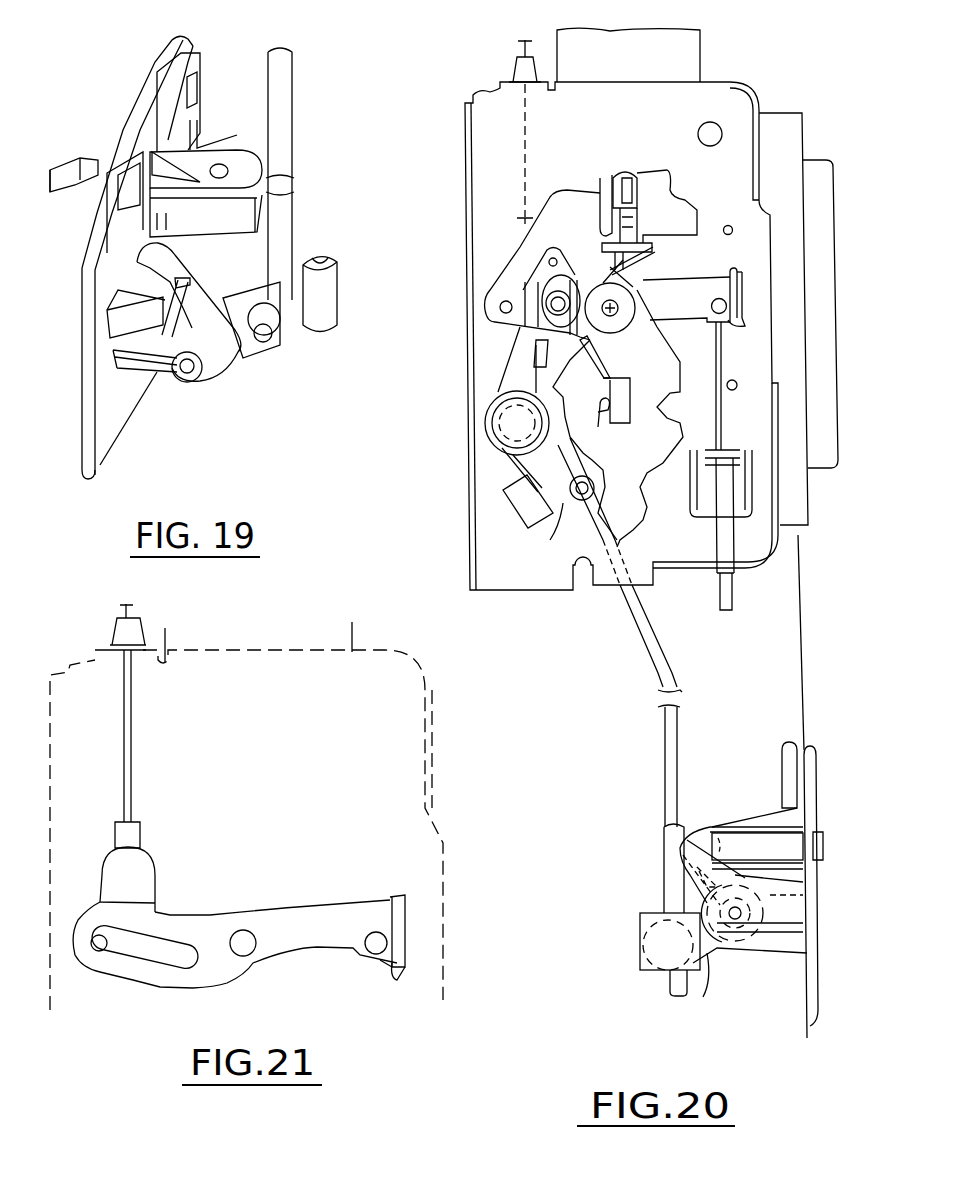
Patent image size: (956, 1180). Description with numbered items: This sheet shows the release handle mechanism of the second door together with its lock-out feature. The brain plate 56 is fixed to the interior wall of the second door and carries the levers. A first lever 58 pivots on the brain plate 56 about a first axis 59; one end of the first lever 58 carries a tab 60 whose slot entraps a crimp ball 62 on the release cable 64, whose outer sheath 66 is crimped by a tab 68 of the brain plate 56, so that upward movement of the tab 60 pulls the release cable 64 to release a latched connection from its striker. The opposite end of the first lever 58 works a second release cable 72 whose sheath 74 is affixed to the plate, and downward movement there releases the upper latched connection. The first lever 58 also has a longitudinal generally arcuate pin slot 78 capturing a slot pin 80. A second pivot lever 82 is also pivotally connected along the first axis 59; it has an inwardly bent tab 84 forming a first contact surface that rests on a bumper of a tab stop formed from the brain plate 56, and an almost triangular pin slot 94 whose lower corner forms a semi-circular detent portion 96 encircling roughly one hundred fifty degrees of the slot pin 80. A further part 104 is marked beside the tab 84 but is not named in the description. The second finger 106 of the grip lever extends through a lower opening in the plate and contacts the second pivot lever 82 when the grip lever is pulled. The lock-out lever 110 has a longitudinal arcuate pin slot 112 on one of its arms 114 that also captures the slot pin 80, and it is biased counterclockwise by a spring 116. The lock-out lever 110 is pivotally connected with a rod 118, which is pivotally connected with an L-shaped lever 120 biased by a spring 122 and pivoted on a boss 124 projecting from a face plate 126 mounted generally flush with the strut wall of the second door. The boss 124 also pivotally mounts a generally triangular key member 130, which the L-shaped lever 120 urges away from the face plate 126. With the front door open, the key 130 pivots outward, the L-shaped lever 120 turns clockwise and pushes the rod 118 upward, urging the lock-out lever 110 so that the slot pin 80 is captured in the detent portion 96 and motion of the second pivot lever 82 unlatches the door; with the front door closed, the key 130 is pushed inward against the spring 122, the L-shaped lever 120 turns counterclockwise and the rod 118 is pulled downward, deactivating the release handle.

In FIG. 20, the brain plate 56 is at (727, 85).
In FIG. 20, the first lever 58 is at (663, 292).
In FIG. 21, the first lever 58 is at (295, 915).
In FIG. 20, the first axis 59 is at (608, 303).
In FIG. 21, the first axis 59 is at (243, 943).
In FIG. 20, the tab 60 is at (747, 327).
In FIG. 21, the tab 60 is at (380, 962).
In FIG. 20, the crimp ball 62 is at (717, 298).
In FIG. 21, the crimp ball 62 is at (370, 942).
In FIG. 20, the release cable 64 is at (733, 353).
In FIG. 20, the outer sheath 66 is at (733, 595).
In FIG. 20, the tab 68 is at (727, 448).
In FIG. 21, the release cable 72 is at (132, 760).
In FIG. 21, the sheath 74 is at (133, 635).
In FIG. 21, the pin slot 78 is at (104, 952).
In FIG. 20, the slot pin 80 is at (547, 288).
In FIG. 20, the second pivot lever 82 is at (553, 200).
In FIG. 20, the inwardly bent tab 84 is at (623, 202).
In FIG. 20, the pin slot 94 is at (553, 263).
In FIG. 20, the detent portion 96 is at (545, 320).
In FIG. 20, the pin 104 is at (633, 222).
In FIG. 20, the second finger 106 is at (606, 428).
In FIG. 20, the lock-out lever 110 is at (560, 520).
In FIG. 20, the pin slot 112 is at (537, 355).
In FIG. 20, the arm 114 is at (503, 383).
In FIG. 20, the spring 116 is at (503, 465).
In FIG. 19, the rod 118 is at (287, 113).
In FIG. 20, the rod 118 is at (677, 748).
In FIG. 19, the L-shaped lever 120 is at (300, 333).
In FIG. 20, the L-shaped lever 120 is at (698, 830).
In FIG. 20, the spring 122 is at (747, 927).
In FIG. 19, the boss 124 is at (160, 370).
In FIG. 20, the boss 124 is at (786, 960).
In FIG. 19, the face plate 126 is at (100, 425).
In FIG. 20, the face plate 126 is at (813, 943).
In FIG. 19, the key member 130 is at (73, 172).
In FIG. 20, the key member 130 is at (815, 840).